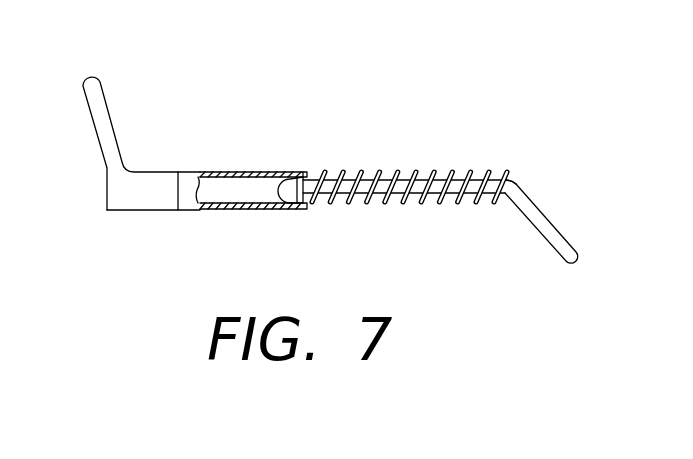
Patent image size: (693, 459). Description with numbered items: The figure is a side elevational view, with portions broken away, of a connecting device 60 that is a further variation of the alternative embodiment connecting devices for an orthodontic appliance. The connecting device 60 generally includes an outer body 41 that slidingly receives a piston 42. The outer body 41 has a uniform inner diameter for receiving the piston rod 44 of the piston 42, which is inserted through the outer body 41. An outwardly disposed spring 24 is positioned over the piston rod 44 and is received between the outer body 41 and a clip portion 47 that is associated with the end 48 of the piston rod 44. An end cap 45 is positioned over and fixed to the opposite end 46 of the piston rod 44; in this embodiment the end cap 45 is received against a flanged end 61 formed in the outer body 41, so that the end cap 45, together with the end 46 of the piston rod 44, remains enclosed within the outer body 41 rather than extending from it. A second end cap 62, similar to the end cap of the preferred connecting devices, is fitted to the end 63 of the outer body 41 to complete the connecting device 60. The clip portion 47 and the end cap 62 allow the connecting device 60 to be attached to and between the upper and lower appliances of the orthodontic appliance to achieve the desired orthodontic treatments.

The spring 24 is at (397, 204).
The outer body 41 is at (220, 209).
The piston 42 is at (511, 179).
The piston rod 44 is at (470, 173).
The end cap 45 is at (292, 186).
The end of the piston rod 46 is at (313, 204).
The clip portion 47 is at (545, 223).
The end of the piston rod 48 is at (478, 204).
The connecting device 60 is at (409, 175).
The flanged end 61 is at (306, 173).
The end cap 62 is at (97, 97).
The end of the outer body 63 is at (189, 168).